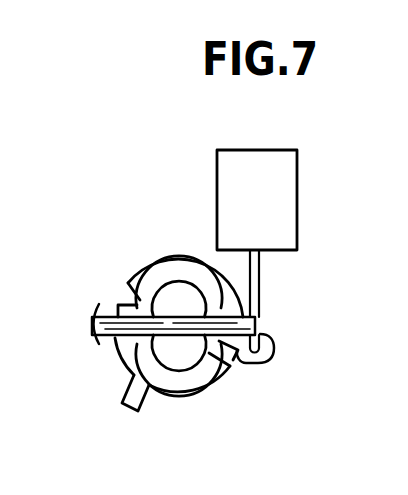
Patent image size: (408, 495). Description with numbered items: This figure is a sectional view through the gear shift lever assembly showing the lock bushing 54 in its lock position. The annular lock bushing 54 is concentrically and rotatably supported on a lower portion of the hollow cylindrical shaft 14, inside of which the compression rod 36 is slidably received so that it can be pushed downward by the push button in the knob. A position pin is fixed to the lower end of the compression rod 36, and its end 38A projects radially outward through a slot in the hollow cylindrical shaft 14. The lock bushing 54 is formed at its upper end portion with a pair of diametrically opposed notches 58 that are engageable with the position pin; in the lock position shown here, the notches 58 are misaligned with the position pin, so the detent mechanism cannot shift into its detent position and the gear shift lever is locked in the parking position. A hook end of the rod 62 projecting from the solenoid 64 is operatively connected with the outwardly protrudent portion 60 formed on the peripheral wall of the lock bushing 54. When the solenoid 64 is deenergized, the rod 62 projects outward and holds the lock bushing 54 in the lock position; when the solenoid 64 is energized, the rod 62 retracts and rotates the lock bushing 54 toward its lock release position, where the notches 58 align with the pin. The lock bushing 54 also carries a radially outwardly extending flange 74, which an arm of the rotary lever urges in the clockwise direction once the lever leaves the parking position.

The hollow cylindrical shaft 14 is at (177, 290).
The compression rod 36 is at (176, 346).
The end of position pin 38A is at (260, 327).
The lock bushing 54 is at (151, 281).
The notches 58 is at (123, 293).
The outwardly protrudent portion 60 is at (268, 365).
The rod 62 is at (260, 295).
The solenoid 64 is at (283, 188).
The radially outwardly extending flange 74 is at (133, 392).